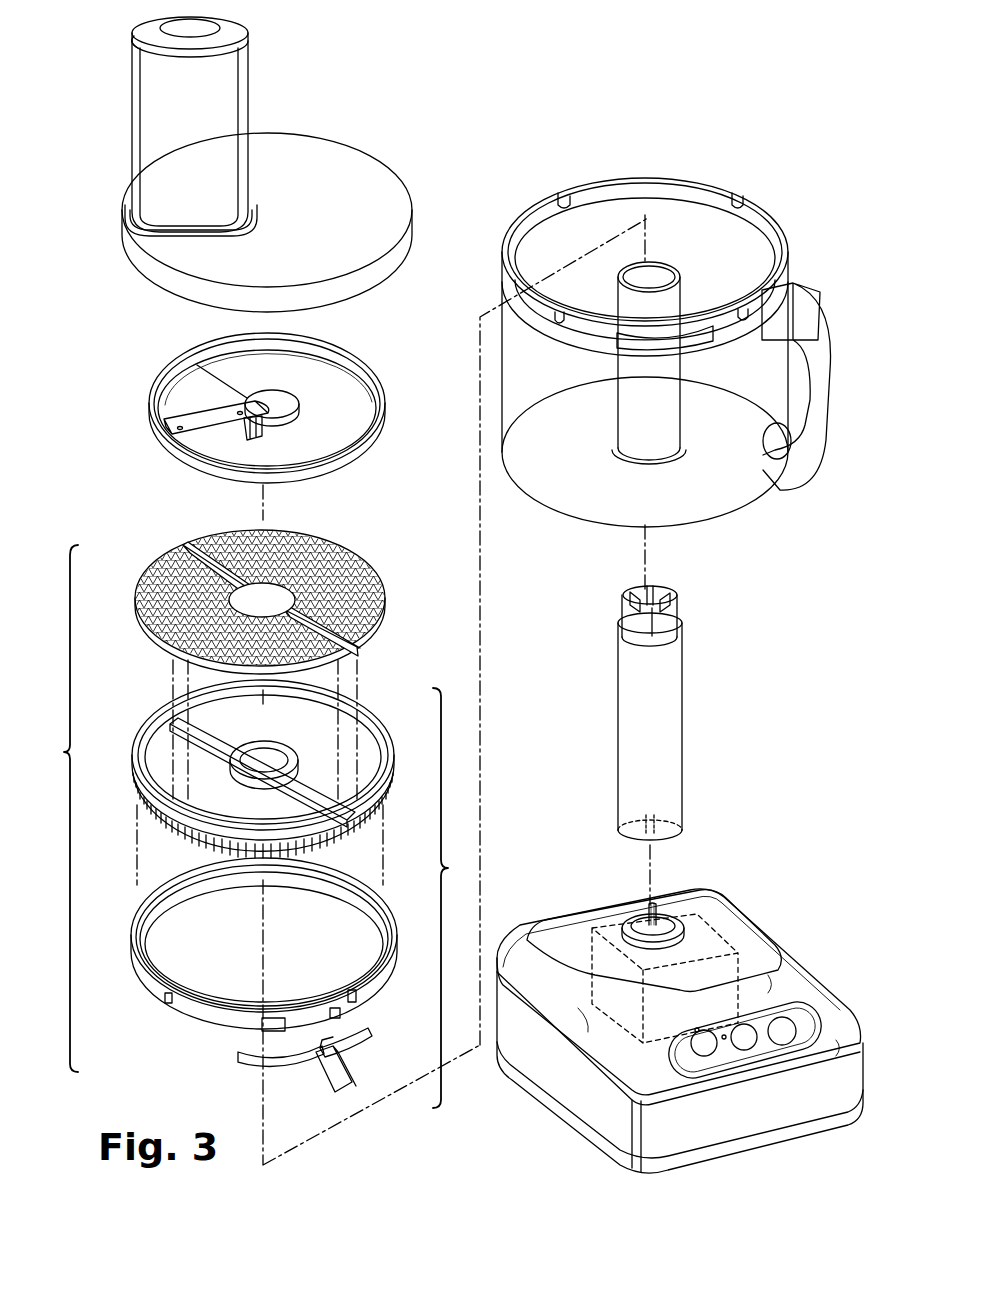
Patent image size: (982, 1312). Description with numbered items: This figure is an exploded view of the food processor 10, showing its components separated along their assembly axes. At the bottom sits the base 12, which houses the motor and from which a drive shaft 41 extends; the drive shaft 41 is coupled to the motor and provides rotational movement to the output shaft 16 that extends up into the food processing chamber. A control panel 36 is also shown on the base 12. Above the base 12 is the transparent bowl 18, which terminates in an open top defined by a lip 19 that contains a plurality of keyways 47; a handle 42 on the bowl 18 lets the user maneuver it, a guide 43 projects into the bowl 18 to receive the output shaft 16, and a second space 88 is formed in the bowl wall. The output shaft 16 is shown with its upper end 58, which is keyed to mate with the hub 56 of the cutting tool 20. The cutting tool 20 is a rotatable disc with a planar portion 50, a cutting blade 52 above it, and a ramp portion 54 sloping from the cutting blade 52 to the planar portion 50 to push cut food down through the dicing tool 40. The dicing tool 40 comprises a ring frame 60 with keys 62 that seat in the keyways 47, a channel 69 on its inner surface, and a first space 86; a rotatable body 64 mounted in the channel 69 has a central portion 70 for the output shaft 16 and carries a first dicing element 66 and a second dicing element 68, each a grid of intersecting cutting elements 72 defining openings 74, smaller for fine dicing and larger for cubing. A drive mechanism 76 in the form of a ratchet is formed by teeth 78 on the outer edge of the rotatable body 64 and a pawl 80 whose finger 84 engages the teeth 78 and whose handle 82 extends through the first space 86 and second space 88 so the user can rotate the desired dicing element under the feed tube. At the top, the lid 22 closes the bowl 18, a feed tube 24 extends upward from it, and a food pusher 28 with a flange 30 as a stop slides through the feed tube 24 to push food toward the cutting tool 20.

The food processor 10 is at (574, 31).
The base 12 is at (682, 1015).
The output shaft 16 is at (689, 713).
The bowl 18 is at (691, 346).
The lip 19 is at (787, 268).
The cutting tool 20 is at (248, 405).
The lid 22 is at (122, 197).
The feed tube 24 is at (135, 95).
The food pusher 28 is at (222, 92).
The flange 30 is at (135, 38).
The control panel 36 is at (785, 1030).
The dicing tool 40 is at (458, 655).
The drive shaft 41 is at (640, 902).
The handle 42 is at (806, 325).
The guide 43 is at (663, 300).
The keyways 47 is at (572, 187).
The planar portion 50 is at (327, 382).
The cutting blade 52 is at (198, 422).
The ramp portion 54 is at (187, 383).
The hub 56 is at (253, 438).
The upper end 58 is at (673, 602).
The frame 60 is at (253, 1008).
The keys 62 is at (167, 1002).
The rotatable body 64 is at (284, 773).
The first dicing element 66 is at (262, 594).
The second dicing element 68 is at (310, 540).
The channel 69 is at (183, 893).
The central portion 70 is at (290, 758).
The cutting elements 72 is at (142, 583).
The openings 74 is at (153, 568).
The drive mechanism 76 is at (285, 923).
The teeth 78 is at (323, 845).
The pawl 80 is at (362, 1087).
The handle 82 is at (340, 1082).
The finger 84 is at (345, 1032).
The first space 86 is at (282, 1024).
The second space 88 is at (713, 341).